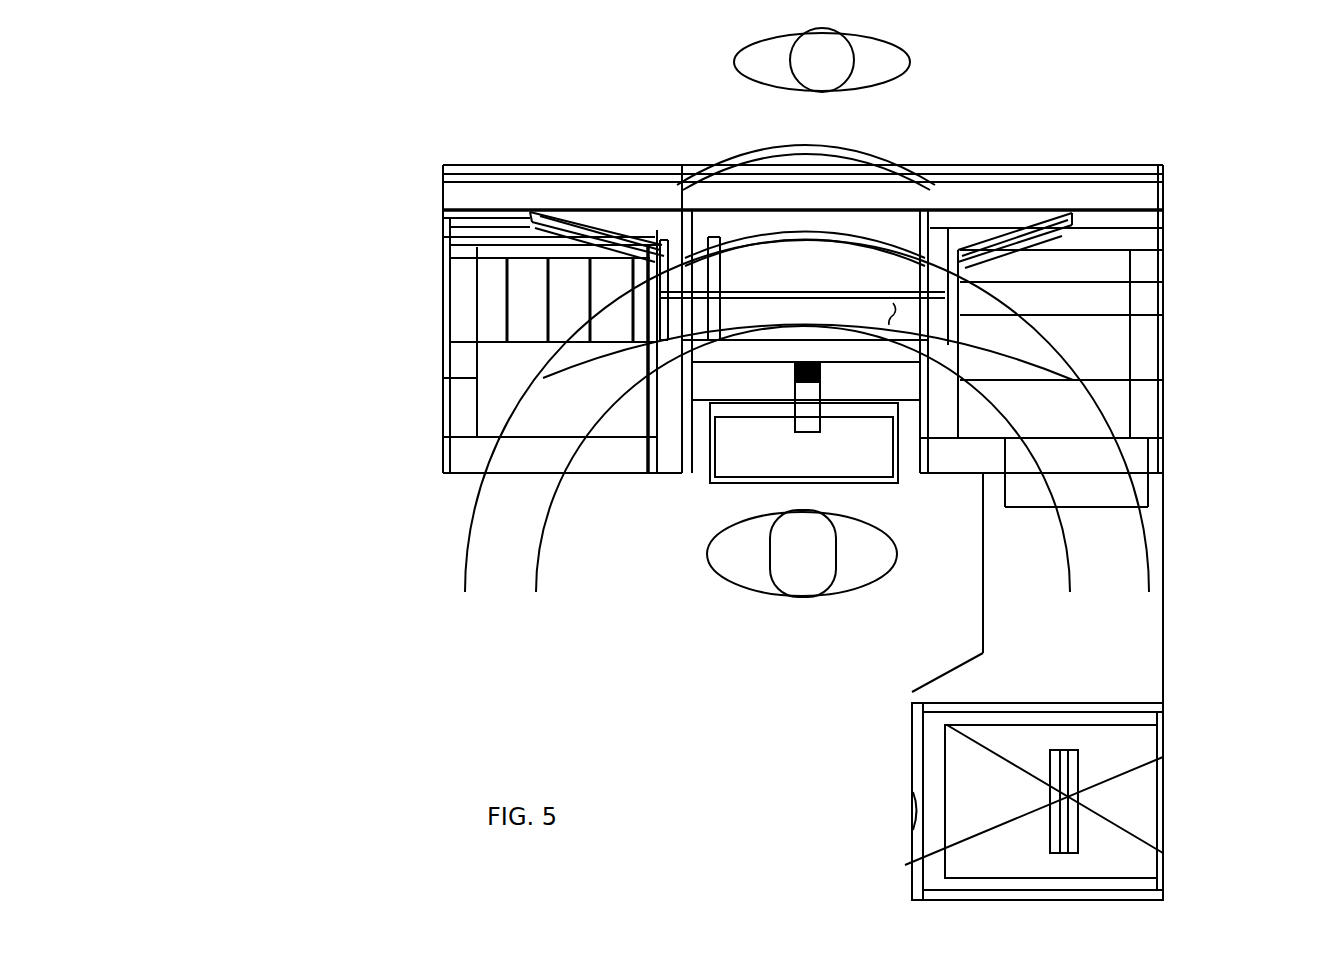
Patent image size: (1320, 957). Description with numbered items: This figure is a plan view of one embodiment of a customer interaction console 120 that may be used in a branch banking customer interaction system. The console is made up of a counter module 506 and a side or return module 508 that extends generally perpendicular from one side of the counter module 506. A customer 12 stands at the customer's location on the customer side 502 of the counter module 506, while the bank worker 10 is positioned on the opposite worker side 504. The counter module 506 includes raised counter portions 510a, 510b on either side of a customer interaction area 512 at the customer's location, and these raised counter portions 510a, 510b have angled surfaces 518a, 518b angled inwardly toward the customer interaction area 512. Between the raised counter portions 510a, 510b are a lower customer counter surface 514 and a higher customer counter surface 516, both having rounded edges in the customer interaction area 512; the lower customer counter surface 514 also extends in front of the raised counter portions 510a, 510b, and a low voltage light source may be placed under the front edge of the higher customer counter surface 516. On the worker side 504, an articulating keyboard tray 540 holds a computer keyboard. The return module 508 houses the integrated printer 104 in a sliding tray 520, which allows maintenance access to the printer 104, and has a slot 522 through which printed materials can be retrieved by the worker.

The bank worker 10 is at (790, 585).
The customer 12 is at (888, 58).
The integrated printer 104 is at (940, 756).
The customer interaction console 120 is at (270, 262).
The customer side 502 is at (652, 83).
The worker side 504 is at (651, 621).
The counter module 506 is at (443, 195).
The return module 508 is at (1165, 598).
The raised counter portion 510a is at (518, 210).
The raised counter portion 510b is at (1112, 208).
The customer interaction area 512 is at (791, 148).
The lower customer counter surface 514 is at (748, 158).
The higher customer counter surface 516 is at (758, 263).
The angled surface 518a is at (583, 216).
The angled surface 518b is at (1022, 218).
The sliding tray 520 is at (913, 822).
The slot 522 is at (1048, 795).
The articulating keyboard tray 540 is at (726, 483).